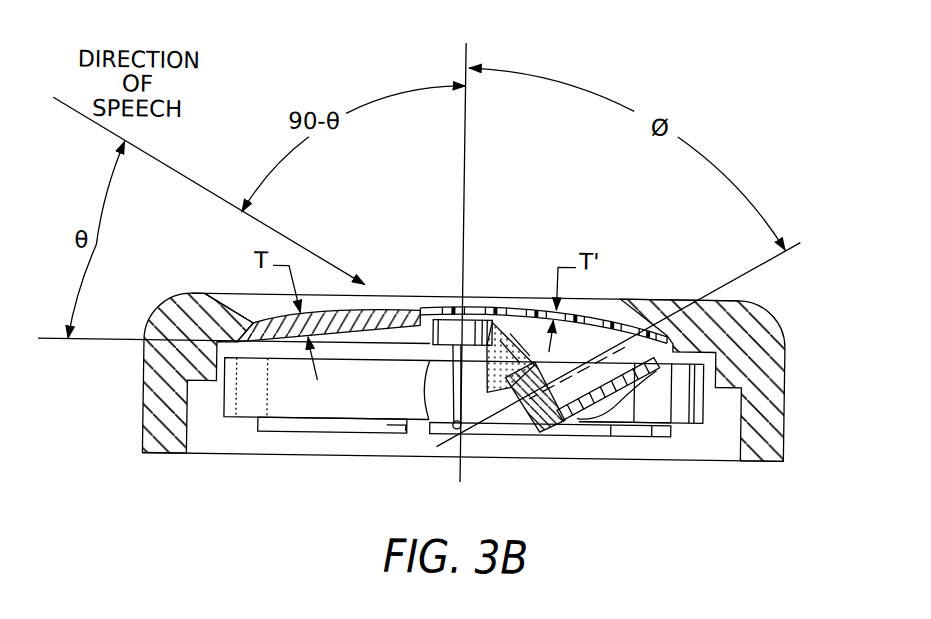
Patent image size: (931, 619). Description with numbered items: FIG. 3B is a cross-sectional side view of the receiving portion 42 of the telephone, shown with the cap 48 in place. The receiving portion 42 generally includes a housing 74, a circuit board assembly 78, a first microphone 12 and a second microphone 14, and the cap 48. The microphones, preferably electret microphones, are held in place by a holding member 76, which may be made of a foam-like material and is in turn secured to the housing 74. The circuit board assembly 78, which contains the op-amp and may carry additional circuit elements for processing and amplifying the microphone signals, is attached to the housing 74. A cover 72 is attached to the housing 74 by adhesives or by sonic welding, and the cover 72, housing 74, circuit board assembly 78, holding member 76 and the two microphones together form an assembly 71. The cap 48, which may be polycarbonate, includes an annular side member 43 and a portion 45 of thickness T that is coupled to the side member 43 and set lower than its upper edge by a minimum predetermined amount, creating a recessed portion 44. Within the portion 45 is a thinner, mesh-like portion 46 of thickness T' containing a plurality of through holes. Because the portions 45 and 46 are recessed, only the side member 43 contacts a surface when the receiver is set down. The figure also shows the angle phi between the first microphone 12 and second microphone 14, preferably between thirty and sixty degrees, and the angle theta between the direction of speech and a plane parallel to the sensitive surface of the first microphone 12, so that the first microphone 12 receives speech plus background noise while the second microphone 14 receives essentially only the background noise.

The first microphone 12 is at (471, 319).
The second microphone 14 is at (553, 436).
The receiving portion 42 is at (797, 273).
The annular side member 43 is at (784, 344).
The recessed portion 44 is at (247, 315).
The portion 45 is at (277, 318).
The portion 46 is at (599, 306).
The cap 48 is at (786, 379).
The assembly 71 is at (238, 441).
The cover 72 is at (703, 410).
The housing 74 is at (320, 435).
The holding member 76 is at (477, 440).
The circuit board assembly 78 is at (433, 436).